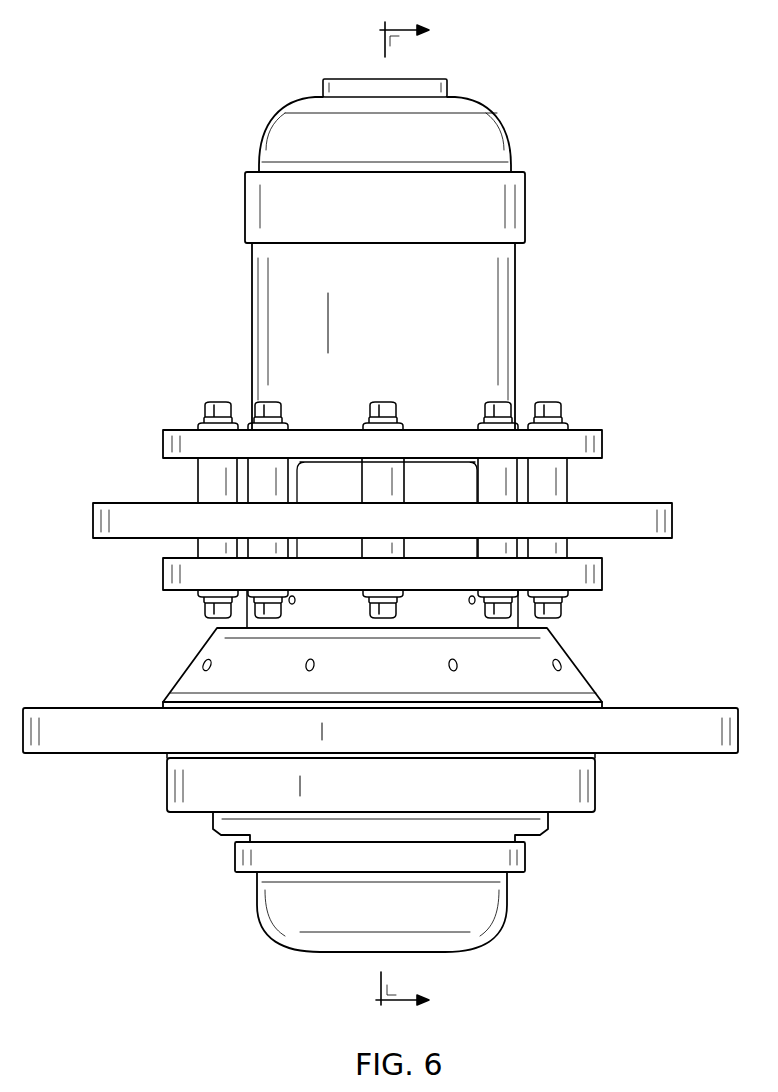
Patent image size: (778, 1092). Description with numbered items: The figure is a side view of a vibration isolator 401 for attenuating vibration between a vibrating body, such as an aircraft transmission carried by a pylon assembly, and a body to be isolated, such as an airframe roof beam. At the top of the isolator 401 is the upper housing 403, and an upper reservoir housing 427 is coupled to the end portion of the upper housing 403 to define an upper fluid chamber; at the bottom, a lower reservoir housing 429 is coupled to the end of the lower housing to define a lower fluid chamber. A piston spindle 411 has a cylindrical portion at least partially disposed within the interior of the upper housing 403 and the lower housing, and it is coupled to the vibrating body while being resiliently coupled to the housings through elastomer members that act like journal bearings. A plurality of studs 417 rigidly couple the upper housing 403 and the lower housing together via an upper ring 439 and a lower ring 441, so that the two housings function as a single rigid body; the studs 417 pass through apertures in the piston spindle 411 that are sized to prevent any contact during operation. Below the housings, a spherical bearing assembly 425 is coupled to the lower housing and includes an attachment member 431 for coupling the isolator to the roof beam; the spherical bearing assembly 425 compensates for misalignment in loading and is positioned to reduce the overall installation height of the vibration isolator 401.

The vibration isolator 401 is at (566, 108).
The upper housing 403 is at (383, 336).
The piston spindle 411 is at (93, 520).
The studs 417 is at (198, 488).
The spherical bearing assembly 425 is at (119, 786).
The upper reservoir housing 427 is at (385, 134).
The lower reservoir housing 429 is at (380, 897).
The attachment member 431 is at (668, 756).
The upper ring 439 is at (163, 446).
The lower ring 441 is at (163, 572).